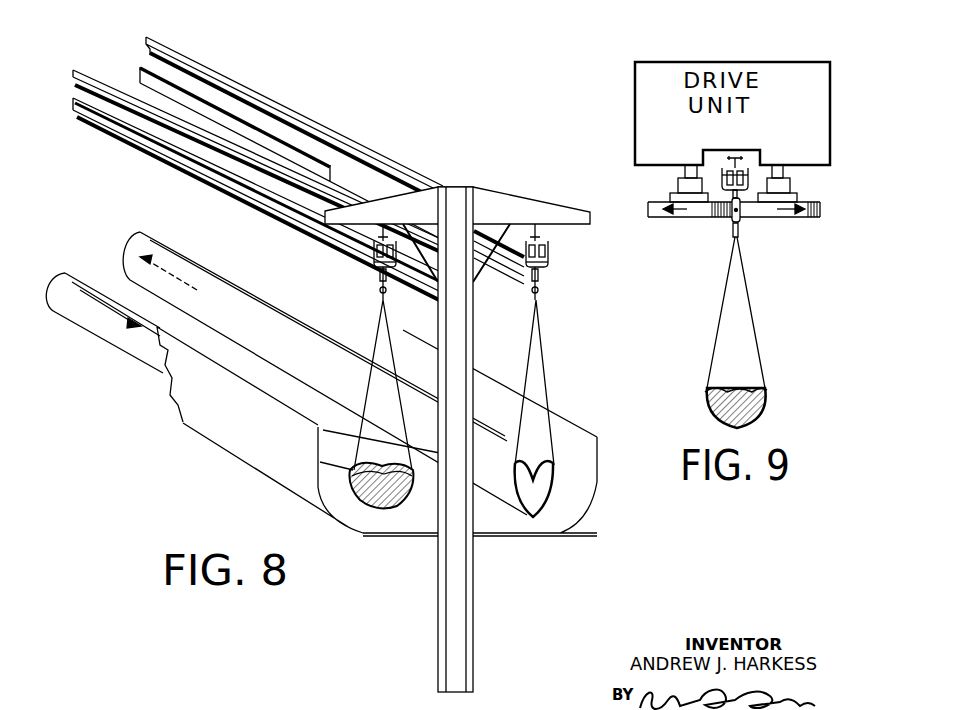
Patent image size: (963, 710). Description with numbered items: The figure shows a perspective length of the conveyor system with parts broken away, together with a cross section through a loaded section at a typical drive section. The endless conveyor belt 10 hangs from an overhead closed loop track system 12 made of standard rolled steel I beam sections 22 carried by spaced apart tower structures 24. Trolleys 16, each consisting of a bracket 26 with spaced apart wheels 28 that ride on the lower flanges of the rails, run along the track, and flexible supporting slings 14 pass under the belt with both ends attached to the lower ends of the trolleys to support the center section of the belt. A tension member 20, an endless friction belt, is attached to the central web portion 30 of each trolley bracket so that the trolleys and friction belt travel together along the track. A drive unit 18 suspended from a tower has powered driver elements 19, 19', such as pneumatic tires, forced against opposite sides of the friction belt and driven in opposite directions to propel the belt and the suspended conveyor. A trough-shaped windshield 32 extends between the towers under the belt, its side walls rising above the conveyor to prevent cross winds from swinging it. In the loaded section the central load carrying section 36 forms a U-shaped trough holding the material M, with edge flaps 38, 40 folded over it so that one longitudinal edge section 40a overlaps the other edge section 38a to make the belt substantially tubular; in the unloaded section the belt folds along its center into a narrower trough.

In FIG. 8, the endless conveyor belt 10 is at (118, 355).
In FIG. 8, the overhead closed loop track system 12 is at (583, 285).
In FIG. 8, the supporting slings 14 is at (366, 390).
In FIG. 8, the trolleys 16 is at (393, 283).
In FIG. 9, the drive unit 18 is at (784, 240).
In FIG. 9, the powered driver element 19 is at (683, 232).
In FIG. 9, the powered driver element 19' is at (785, 225).
In FIG. 8, the tension member 20 is at (137, 152).
In FIG. 9, the tension member 20 is at (732, 218).
In FIG. 8, the I beam sections 22 is at (385, 236).
In FIG. 9, the I beam sections 22 is at (735, 157).
In FIG. 8, the tower structures 24 is at (470, 600).
In FIG. 8, the brackets 26 is at (395, 263).
In FIG. 8, the wheels 28 is at (380, 240).
In FIG. 9, the wheels 28 is at (738, 173).
In FIG. 9, the central web portion 30 is at (740, 198).
In FIG. 8, the trough-shaped windshield 32 is at (190, 382).
In FIG. 8, the central load carrying section 36 is at (368, 530).
In FIG. 8, the edge flap 38 is at (387, 460).
In FIG. 8, the longitudinal edge section 38a is at (383, 503).
In FIG. 8, the edge flap 40 is at (347, 453).
In FIG. 8, the longitudinal edge section 40a is at (380, 460).
In FIG. 8, the material M is at (353, 512).